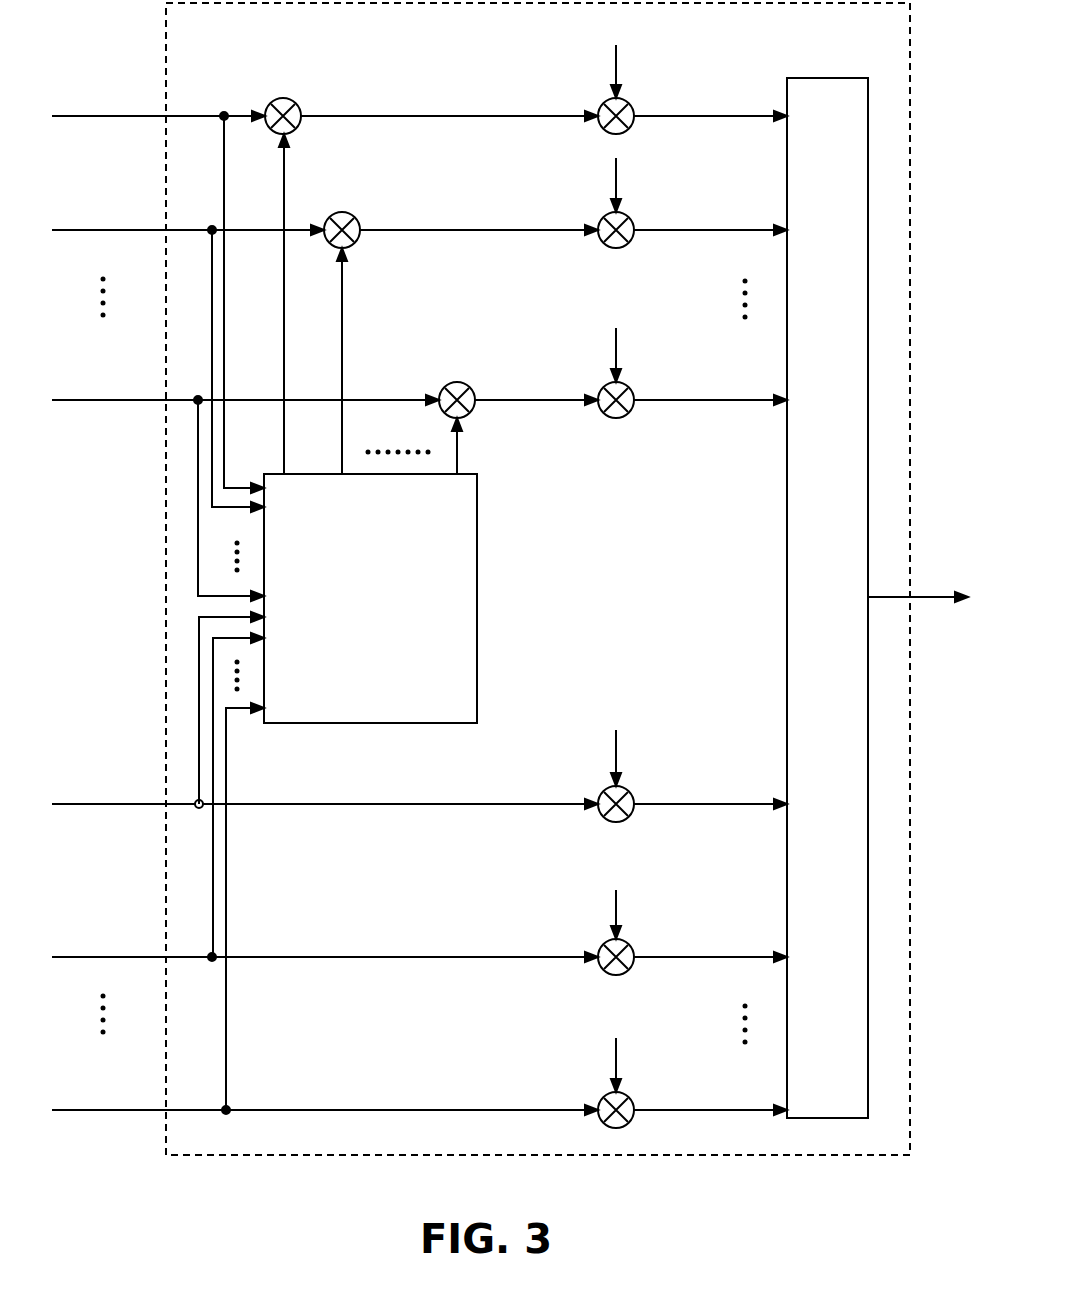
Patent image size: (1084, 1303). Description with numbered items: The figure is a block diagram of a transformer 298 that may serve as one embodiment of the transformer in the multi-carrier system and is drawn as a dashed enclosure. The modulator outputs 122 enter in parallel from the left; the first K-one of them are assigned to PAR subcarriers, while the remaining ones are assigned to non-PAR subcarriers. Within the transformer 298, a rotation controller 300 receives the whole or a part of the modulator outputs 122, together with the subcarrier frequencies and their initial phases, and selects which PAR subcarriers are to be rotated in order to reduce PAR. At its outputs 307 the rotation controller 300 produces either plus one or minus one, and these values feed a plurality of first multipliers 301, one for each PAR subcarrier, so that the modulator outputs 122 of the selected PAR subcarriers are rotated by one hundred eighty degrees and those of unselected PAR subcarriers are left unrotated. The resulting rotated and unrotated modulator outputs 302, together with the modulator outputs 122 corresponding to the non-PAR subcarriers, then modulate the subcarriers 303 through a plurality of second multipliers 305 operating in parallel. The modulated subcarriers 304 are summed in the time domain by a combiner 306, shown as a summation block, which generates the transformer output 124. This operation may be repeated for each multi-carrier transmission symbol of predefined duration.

The modulator outputs 122 is at (80, 115).
The transformer output 124 is at (930, 596).
The transformer 298 is at (477, 36).
The rotation controller 300 is at (350, 633).
The first multipliers 301 is at (284, 97).
The rotated and unrotated modulator outputs 302 is at (460, 115).
The subcarriers 303 is at (614, 58).
The modulated subcarriers 304 is at (710, 115).
The second multipliers 305 is at (630, 129).
The combiner 306 is at (807, 117).
The rotation controller outputs 307 is at (287, 160).